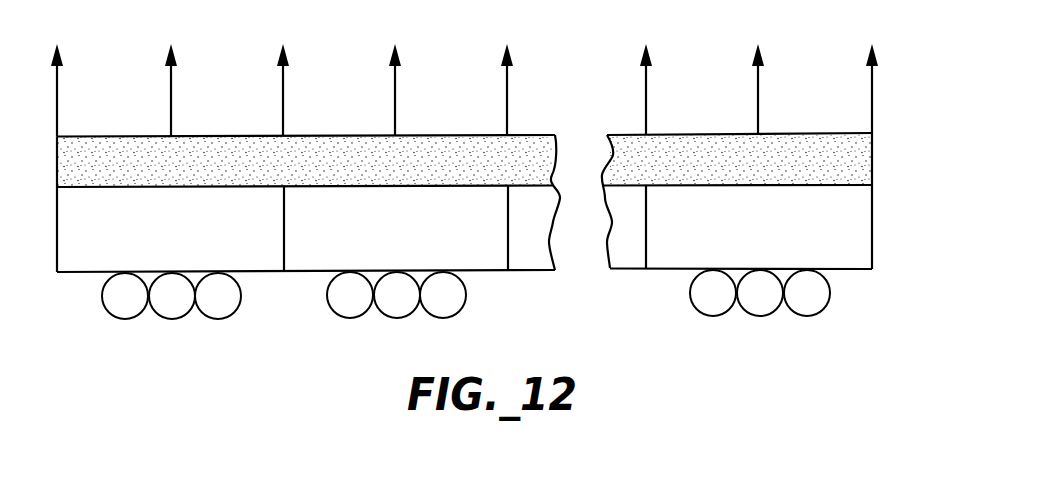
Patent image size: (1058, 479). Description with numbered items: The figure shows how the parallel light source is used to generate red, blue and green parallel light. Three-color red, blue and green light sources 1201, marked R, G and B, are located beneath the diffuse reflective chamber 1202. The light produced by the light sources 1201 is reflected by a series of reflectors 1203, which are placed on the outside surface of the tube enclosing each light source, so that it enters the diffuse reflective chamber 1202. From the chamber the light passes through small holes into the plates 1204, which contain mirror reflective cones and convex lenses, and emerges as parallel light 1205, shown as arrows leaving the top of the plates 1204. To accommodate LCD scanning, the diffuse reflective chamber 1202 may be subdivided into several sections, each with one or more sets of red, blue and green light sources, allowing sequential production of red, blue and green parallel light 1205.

The red, blue and green light sources 1201 is at (220, 318).
The diffuse reflective chamber 1202 is at (473, 258).
The reflectors 1203 is at (445, 317).
The plates 1204 is at (68, 152).
The parallel light 1205 is at (542, 40).